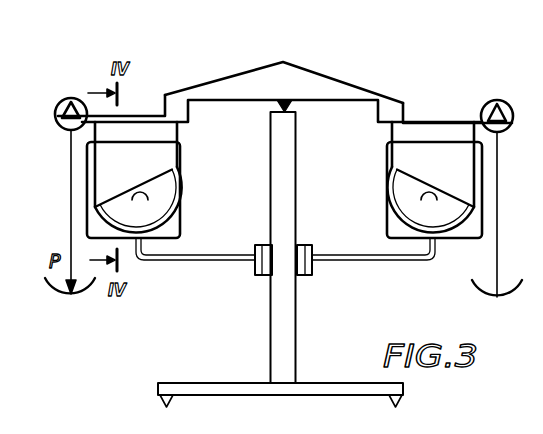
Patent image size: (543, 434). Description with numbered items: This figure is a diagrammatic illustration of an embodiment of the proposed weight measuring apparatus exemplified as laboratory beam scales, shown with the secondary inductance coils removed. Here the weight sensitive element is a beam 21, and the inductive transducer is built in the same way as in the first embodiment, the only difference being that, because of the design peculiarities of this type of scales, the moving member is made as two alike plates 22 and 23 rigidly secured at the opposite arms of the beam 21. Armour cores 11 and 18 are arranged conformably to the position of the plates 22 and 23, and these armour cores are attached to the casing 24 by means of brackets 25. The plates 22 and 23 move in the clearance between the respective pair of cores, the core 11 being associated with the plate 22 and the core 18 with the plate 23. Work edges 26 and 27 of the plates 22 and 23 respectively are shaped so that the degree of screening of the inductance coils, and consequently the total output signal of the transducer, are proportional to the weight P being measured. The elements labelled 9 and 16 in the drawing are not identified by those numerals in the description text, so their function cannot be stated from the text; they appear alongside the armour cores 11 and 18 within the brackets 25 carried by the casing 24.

The bowl 9 is at (152, 215).
The armour core 11 is at (177, 190).
The bowl 16 is at (412, 212).
The armour core 18 is at (393, 195).
The beam 21 is at (332, 88).
The plate 22 is at (164, 133).
The plate 23 is at (437, 128).
The casing 24 is at (288, 333).
The bracket 25 is at (223, 258).
The work edge 26 is at (137, 197).
The work edge 27 is at (424, 195).